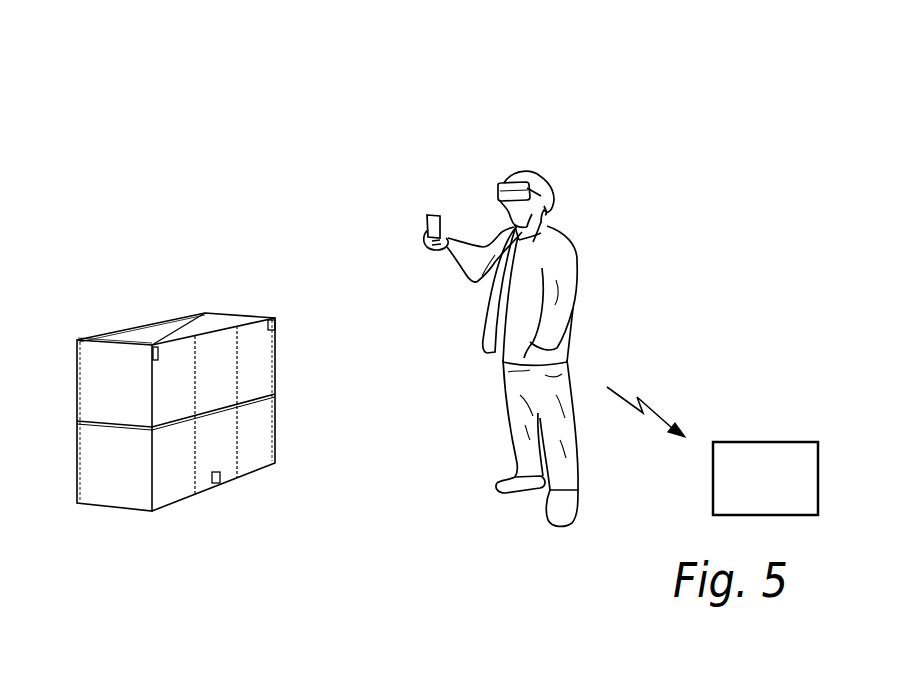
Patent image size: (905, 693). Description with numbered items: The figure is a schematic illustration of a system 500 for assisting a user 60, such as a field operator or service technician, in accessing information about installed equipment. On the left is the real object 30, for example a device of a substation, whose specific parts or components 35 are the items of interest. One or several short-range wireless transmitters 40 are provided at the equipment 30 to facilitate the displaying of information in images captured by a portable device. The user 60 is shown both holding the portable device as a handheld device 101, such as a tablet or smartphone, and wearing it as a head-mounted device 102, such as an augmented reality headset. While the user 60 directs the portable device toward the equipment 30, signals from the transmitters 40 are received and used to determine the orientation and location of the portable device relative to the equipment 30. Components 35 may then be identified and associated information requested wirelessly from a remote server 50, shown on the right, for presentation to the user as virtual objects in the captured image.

The system 500 is at (538, 71).
The real object 30 is at (222, 272).
The component 35 is at (229, 382).
The short-range wireless transmitter 40 is at (155, 346).
The user 60 is at (600, 186).
The handheld device 101 is at (427, 215).
The head-mounted device 102 is at (507, 183).
The server 50 is at (758, 441).